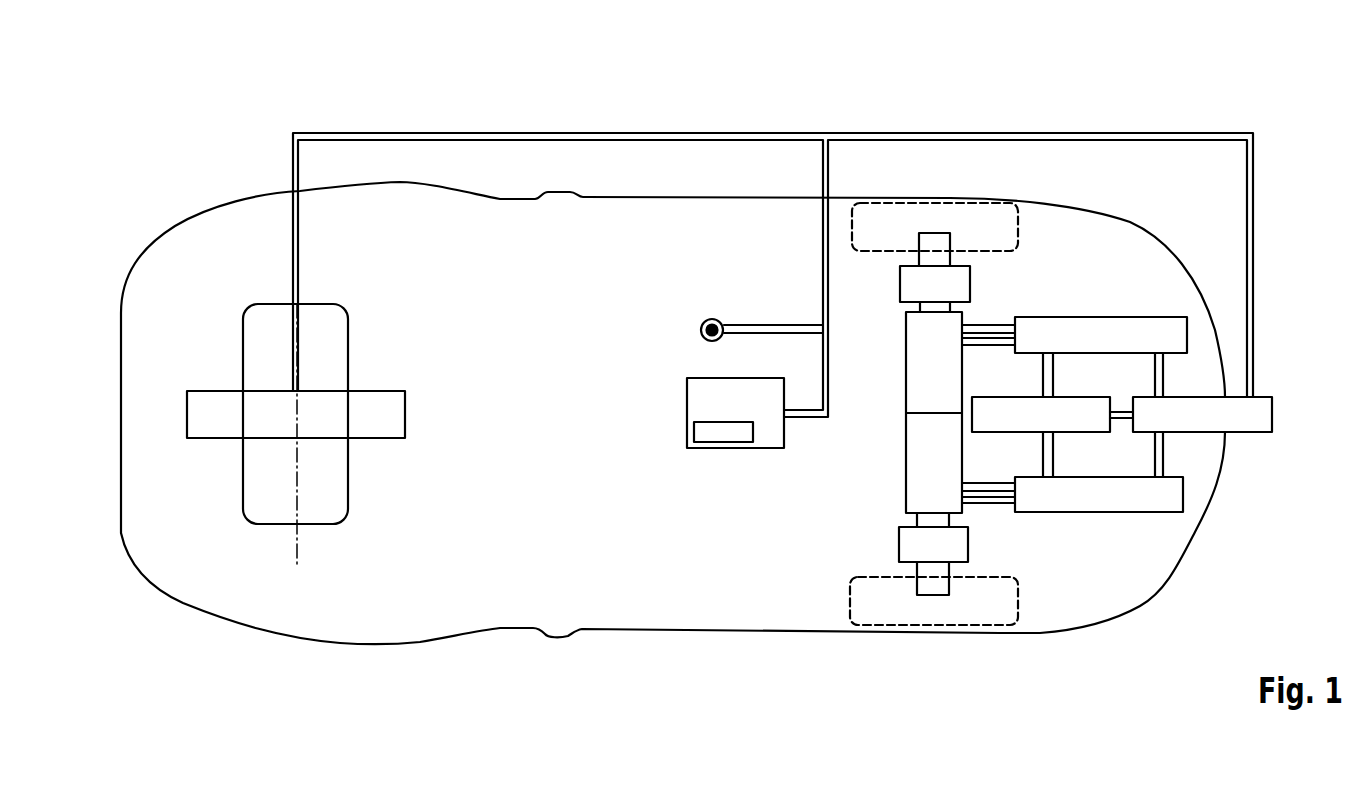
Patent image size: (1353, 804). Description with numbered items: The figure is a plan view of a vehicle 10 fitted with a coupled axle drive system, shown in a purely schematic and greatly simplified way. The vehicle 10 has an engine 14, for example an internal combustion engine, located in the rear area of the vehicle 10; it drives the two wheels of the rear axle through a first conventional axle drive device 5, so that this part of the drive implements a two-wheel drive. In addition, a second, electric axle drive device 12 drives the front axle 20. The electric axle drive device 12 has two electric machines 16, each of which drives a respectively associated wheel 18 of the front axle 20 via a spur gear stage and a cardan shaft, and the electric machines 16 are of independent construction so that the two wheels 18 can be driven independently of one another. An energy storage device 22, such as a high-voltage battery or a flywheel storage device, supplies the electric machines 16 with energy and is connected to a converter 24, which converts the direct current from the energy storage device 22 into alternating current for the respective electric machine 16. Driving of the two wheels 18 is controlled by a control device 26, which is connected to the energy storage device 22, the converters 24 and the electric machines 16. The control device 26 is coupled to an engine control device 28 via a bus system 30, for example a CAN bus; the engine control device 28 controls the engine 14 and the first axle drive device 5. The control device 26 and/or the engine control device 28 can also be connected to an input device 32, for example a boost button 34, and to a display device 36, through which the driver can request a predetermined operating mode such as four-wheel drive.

The vehicle 10 is at (210, 165).
The first axle drive device 5 is at (297, 555).
The electric axle drive device 12 is at (909, 589).
The engine 14 is at (348, 480).
The electric machines 16 is at (896, 369).
The wheels 18 is at (1018, 223).
The front axle 20 is at (919, 240).
The energy storage device 22 is at (985, 432).
The converter 24 is at (1100, 317).
The control device 26 is at (1272, 413).
The engine control device 28 is at (405, 413).
The bus system 30 is at (620, 139).
The input device 32 is at (745, 284).
The boost button 34 is at (711, 319).
The display device 36 is at (687, 413).